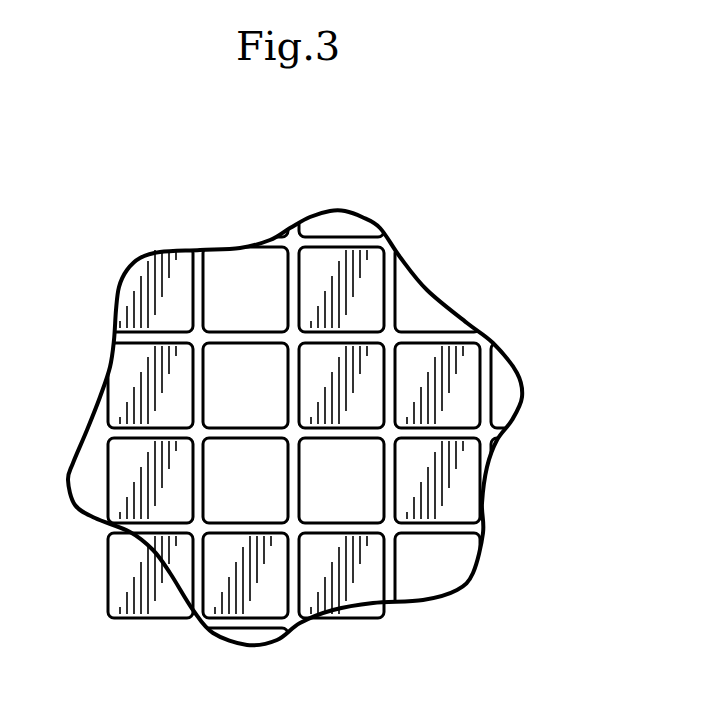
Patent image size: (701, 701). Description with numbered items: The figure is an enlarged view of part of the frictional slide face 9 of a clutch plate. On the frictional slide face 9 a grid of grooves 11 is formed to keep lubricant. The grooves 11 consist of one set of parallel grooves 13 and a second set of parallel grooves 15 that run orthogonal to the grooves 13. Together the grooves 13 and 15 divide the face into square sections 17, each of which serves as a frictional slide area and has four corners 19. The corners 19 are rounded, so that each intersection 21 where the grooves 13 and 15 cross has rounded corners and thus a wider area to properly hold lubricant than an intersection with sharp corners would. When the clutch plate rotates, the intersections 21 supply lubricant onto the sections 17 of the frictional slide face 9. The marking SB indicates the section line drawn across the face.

The alignment pattern 9 is at (147, 288).
The semiconductor wafer 11 is at (340, 230).
The chip region 13 is at (198, 253).
The corner mark 15 is at (132, 323).
The hatched pattern region 17 is at (353, 383).
The scribe line intersection 19 is at (393, 345).
The scribe line 21 is at (290, 432).
The scribe line section SB is at (288, 289).